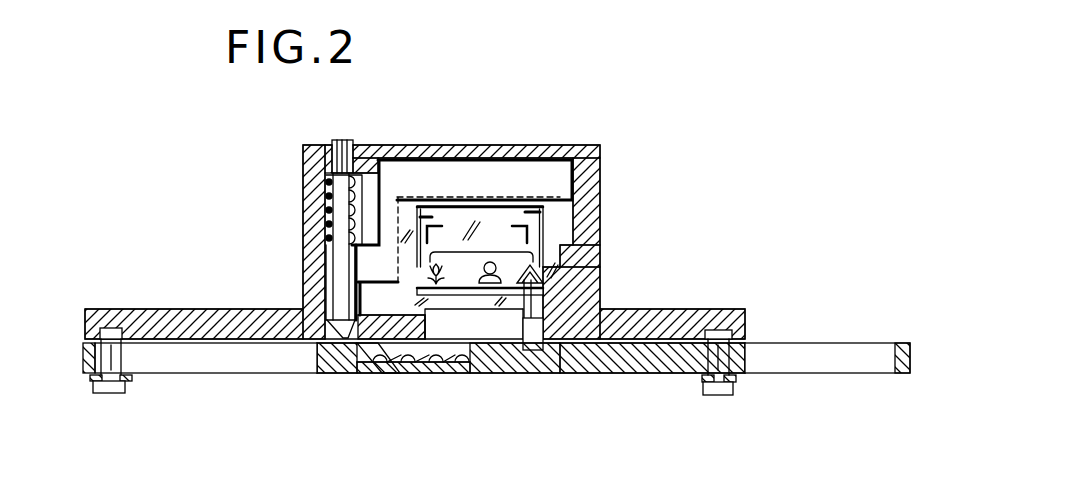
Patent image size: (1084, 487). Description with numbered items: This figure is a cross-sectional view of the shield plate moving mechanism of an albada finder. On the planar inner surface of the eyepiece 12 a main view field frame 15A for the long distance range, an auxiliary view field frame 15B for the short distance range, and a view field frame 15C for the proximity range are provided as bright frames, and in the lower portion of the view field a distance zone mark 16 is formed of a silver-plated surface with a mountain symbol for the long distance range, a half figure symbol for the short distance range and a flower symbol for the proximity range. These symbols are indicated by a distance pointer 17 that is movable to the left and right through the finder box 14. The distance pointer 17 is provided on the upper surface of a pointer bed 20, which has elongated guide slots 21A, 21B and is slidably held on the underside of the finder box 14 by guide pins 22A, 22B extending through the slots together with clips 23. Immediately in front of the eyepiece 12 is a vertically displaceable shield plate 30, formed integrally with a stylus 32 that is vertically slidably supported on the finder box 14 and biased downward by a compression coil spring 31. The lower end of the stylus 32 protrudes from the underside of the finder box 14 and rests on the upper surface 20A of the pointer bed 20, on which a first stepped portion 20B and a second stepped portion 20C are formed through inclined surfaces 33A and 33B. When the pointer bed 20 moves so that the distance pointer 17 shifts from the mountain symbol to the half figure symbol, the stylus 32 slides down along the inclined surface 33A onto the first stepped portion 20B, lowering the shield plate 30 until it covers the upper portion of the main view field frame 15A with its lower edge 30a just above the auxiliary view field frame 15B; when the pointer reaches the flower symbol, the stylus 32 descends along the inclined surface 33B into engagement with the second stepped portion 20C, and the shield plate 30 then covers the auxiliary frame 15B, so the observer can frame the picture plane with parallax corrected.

The eyepiece 12 is at (479, 306).
The finder box 14 is at (183, 320).
The main view field frame 15A is at (517, 206).
The auxiliary view field frame 15B is at (537, 210).
The view field frame for proximity range 15C is at (527, 235).
The distance zone mark 16 is at (483, 252).
The distance pointer 17 is at (532, 305).
The pointer bed 20 is at (588, 378).
The upper surface of pointer bed 20A is at (362, 343).
The first stepped portion 20B is at (413, 344).
The second stepped portion 20C is at (460, 378).
The guide slot 21A is at (846, 370).
The guide slot 21B is at (239, 366).
The guide pin 22A is at (748, 377).
The guide pin 22B is at (81, 377).
The clip 23 is at (135, 378).
The shield plate 30 is at (440, 176).
The lower edge of shield plate 30a is at (405, 197).
The compression coil spring 31 is at (326, 186).
The stylus 32 is at (340, 268).
The inclined surface 33A is at (386, 350).
The inclined surface 33B is at (445, 360).